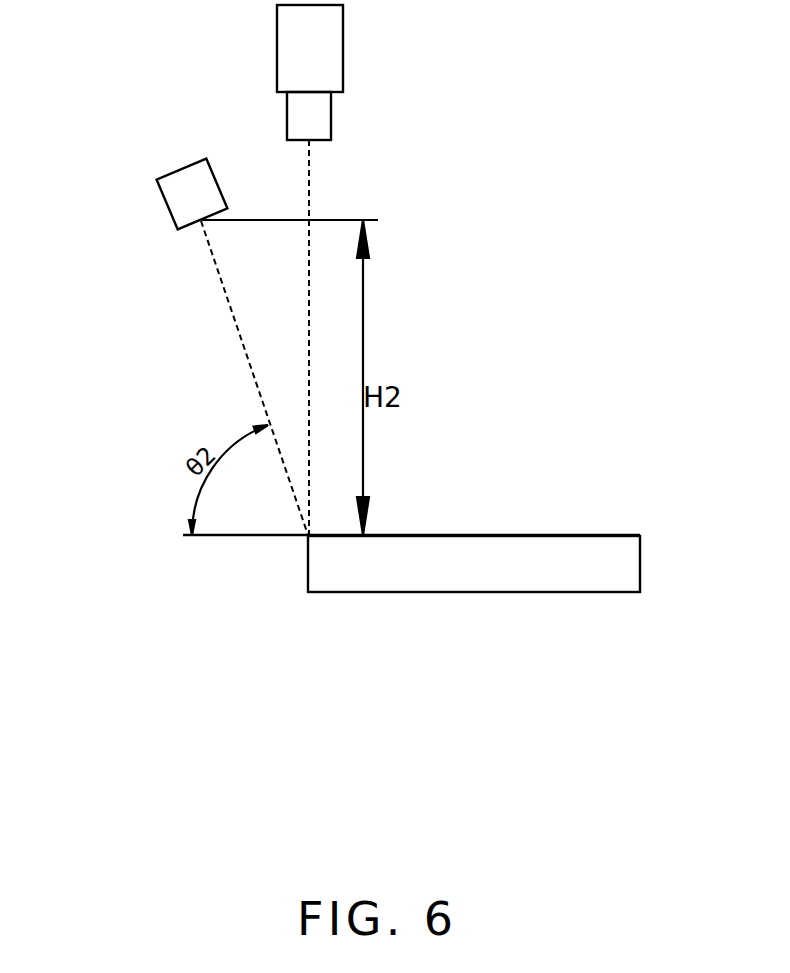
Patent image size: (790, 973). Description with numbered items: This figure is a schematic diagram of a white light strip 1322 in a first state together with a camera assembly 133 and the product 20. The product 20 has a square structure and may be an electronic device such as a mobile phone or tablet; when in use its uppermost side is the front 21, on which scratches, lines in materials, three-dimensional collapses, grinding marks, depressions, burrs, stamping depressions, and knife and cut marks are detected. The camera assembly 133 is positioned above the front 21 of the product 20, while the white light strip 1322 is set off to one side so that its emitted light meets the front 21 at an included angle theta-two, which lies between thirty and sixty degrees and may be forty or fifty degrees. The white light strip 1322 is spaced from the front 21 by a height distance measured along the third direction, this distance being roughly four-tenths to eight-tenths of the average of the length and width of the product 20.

The camera assembly 133 is at (328, 27).
The white light strip 1322 is at (173, 193).
The front 21 is at (587, 535).
The product 20 is at (568, 582).